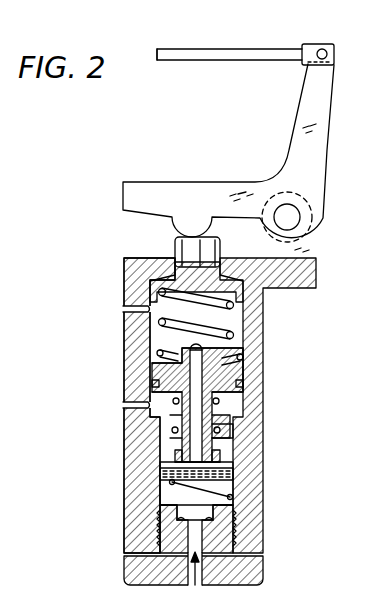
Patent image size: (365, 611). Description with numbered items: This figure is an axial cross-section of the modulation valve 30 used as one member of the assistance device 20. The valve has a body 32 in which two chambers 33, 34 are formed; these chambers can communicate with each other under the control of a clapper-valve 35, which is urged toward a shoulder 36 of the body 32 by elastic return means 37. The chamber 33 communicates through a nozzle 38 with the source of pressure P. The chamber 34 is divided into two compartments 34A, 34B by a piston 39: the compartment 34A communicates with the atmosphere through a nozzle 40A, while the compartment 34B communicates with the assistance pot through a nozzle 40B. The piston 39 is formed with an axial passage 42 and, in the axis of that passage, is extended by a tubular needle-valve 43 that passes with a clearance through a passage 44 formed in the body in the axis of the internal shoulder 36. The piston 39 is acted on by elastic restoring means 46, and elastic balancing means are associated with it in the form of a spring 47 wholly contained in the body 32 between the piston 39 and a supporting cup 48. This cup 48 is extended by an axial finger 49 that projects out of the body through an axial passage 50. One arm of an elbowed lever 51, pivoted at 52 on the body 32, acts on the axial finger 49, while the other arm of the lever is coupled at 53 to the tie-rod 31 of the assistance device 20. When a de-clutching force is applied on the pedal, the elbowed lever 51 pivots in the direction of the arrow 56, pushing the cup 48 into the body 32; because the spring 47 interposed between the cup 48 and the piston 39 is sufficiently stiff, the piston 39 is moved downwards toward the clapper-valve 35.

The assistance device 20 is at (226, 49).
The tie-rod 31 is at (158, 50).
The coupling point 53 is at (325, 48).
The elbowed lever 51 is at (328, 133).
The pivot 52 is at (293, 215).
The arrow 56 is at (256, 122).
The axial finger 49 is at (178, 253).
The axial passage 50 is at (126, 273).
The modulating valve 30 is at (264, 470).
The nozzle 40A is at (124, 310).
The nozzle 40B is at (124, 406).
The supporting cup 48 is at (250, 305).
The spring 47 is at (160, 325).
The chamber 34 is at (242, 356).
The compartment 34A is at (158, 365).
The compartment 34B is at (167, 425).
The axial passage 42 is at (214, 348).
The piston 39 is at (232, 394).
The tubular needle-valve 43 is at (220, 402).
The elastic restoring means 46 is at (220, 430).
The passage 44 is at (180, 455).
The shoulder 36 is at (172, 473).
The clapper-valve 35 is at (205, 490).
The elastic return means 37 is at (230, 507).
The chamber 33 is at (172, 500).
The body 32 is at (248, 540).
The nozzle 38 is at (186, 566).
The source of pressure P is at (215, 580).